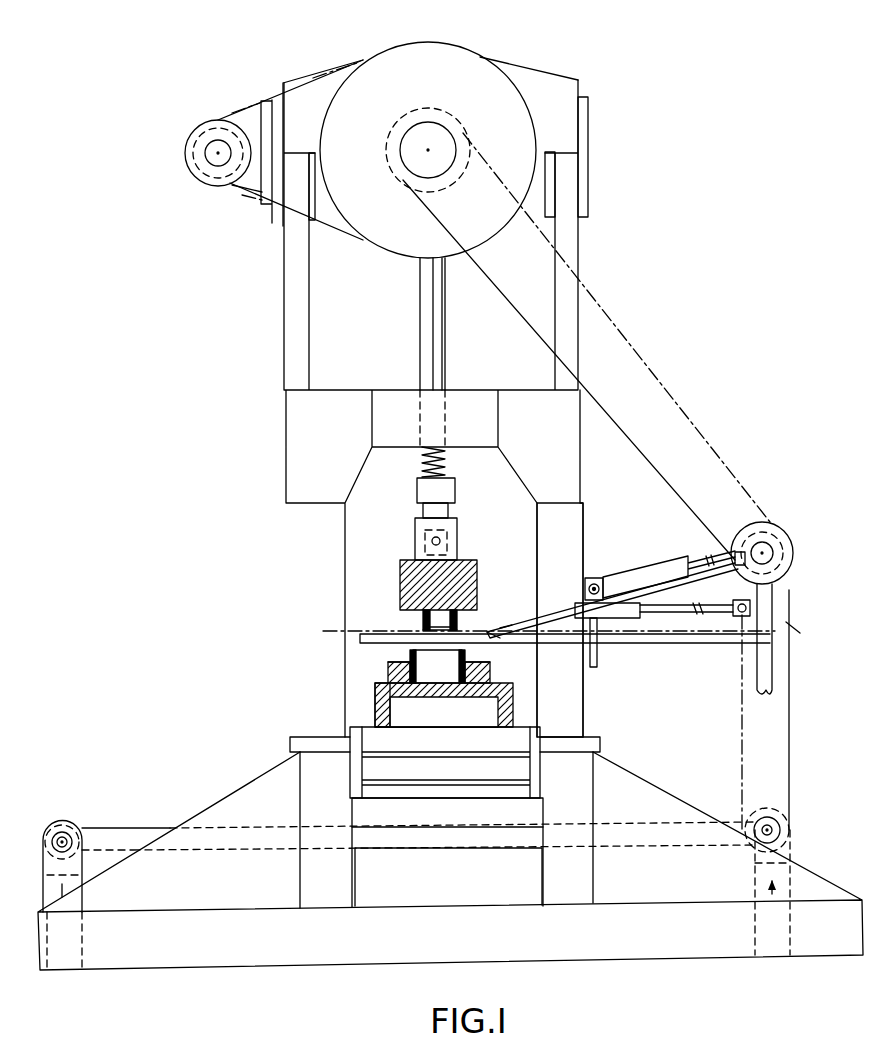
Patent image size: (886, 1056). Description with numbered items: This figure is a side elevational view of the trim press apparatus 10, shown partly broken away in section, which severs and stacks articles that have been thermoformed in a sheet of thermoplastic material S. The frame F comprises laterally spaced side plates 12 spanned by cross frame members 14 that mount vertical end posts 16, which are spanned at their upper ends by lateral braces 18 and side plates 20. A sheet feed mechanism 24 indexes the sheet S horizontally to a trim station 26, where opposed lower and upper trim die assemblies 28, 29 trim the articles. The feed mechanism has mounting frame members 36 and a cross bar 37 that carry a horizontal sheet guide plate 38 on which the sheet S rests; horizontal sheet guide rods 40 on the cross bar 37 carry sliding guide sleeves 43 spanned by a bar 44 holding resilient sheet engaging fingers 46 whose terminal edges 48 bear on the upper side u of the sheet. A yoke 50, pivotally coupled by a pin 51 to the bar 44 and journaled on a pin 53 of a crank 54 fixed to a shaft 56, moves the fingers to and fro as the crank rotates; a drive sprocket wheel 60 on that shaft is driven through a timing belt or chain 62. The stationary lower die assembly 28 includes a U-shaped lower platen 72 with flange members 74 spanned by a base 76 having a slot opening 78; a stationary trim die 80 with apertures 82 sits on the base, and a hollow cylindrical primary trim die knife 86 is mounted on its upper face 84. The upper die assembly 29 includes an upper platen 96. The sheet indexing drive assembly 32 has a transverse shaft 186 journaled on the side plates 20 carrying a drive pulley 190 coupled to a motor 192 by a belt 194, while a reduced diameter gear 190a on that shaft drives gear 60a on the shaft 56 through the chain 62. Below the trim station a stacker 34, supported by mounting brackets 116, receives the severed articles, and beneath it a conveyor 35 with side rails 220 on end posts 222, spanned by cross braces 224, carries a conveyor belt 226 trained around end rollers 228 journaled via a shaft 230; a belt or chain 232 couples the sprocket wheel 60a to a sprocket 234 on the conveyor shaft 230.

The trim press apparatus 10 is at (210, 516).
The frame F is at (283, 428).
The side plates 12 is at (222, 797).
The cross frame members 14 is at (598, 740).
The vertical end posts 16 is at (592, 702).
The lateral braces 18 is at (588, 196).
The side plates 20 is at (566, 88).
The sheet feed mechanism 24 is at (648, 562).
The trim station 26 is at (395, 596).
The lower trim die assembly 28 is at (368, 663).
The upper trim die assembly 29 is at (497, 548).
The sheet indexing drive assembly 32 is at (180, 152).
The stacker 34 is at (343, 772).
The conveyor 35 is at (115, 822).
The mounting frame members 36 is at (597, 662).
The cross bar 37 is at (757, 680).
The sheet guide plate 38 is at (678, 637).
The sheet guide rods 40 is at (670, 608).
The guide sleeves 43 is at (620, 626).
The bar 44 is at (604, 586).
The sheet engaging fingers 46 is at (506, 602).
The terminal edges 48 is at (497, 628).
The yoke 50 is at (662, 572).
The pin 51 is at (597, 578).
The pin 53 is at (736, 556).
The crank 54 is at (780, 606).
The shaft 56 is at (775, 543).
The drive sprocket wheel 60 is at (763, 522).
The gear 60a is at (775, 566).
The timing belt or chain 62 is at (642, 356).
The lower platen 72 is at (520, 704).
The flange members 74 is at (378, 705).
The base 76 is at (492, 703).
The slot opening 78 is at (445, 761).
The stationary trim die 80 is at (388, 672).
The apertures 82 is at (478, 673).
The upper face 84 is at (410, 656).
The primary trim die knife 86 is at (412, 660).
The upper platen 96 is at (468, 556).
The mounting brackets 116 is at (350, 784).
The transverse shaft 186 is at (412, 160).
The drive pulley 190 is at (520, 92).
The reduced diameter gear 190a is at (460, 184).
The motor 192 is at (195, 184).
The belt 194 is at (334, 230).
The side rails 220 is at (448, 838).
The end posts 222 is at (70, 866).
The cross braces 224 is at (78, 905).
The conveyor belt 226 is at (367, 827).
The end rollers 228 is at (50, 838).
The shaft 230 is at (785, 830).
The belt or chain 232 is at (789, 670).
The sprocket 234 is at (778, 812).
The sheet of thermoplastic material S is at (373, 634).
The upper side u is at (801, 630).